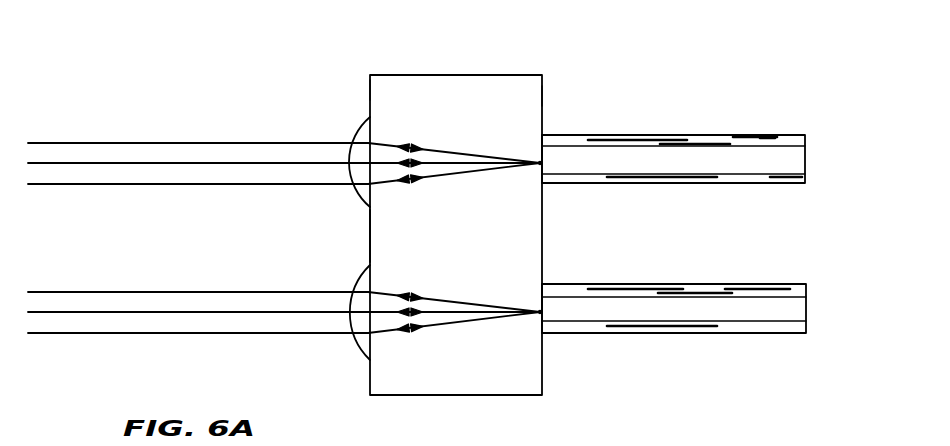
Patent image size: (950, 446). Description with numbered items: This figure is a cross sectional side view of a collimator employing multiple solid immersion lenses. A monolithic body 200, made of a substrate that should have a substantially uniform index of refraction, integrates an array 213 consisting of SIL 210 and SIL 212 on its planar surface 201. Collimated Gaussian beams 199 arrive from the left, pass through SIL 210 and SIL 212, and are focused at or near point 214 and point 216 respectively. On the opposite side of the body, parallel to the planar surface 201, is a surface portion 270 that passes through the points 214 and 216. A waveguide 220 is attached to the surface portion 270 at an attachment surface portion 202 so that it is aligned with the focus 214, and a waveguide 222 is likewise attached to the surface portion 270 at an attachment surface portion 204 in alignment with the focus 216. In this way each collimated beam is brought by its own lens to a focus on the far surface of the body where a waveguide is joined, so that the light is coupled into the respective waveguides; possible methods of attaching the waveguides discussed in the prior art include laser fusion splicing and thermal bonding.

The collimated Gaussian beams 199 is at (98, 110).
The monolithic body 200 is at (500, 87).
The planar surface 201 is at (368, 89).
The surface portion 270 is at (543, 96).
The SIL 210 is at (360, 126).
The SIL 212 is at (357, 342).
The array 213 is at (350, 216).
The waveguide 220 is at (789, 158).
The waveguide 222 is at (797, 310).
The attachment surface portion 202 is at (545, 148).
The attachment surface portion 204 is at (545, 298).
The point 214 is at (541, 162).
The point 216 is at (541, 312).